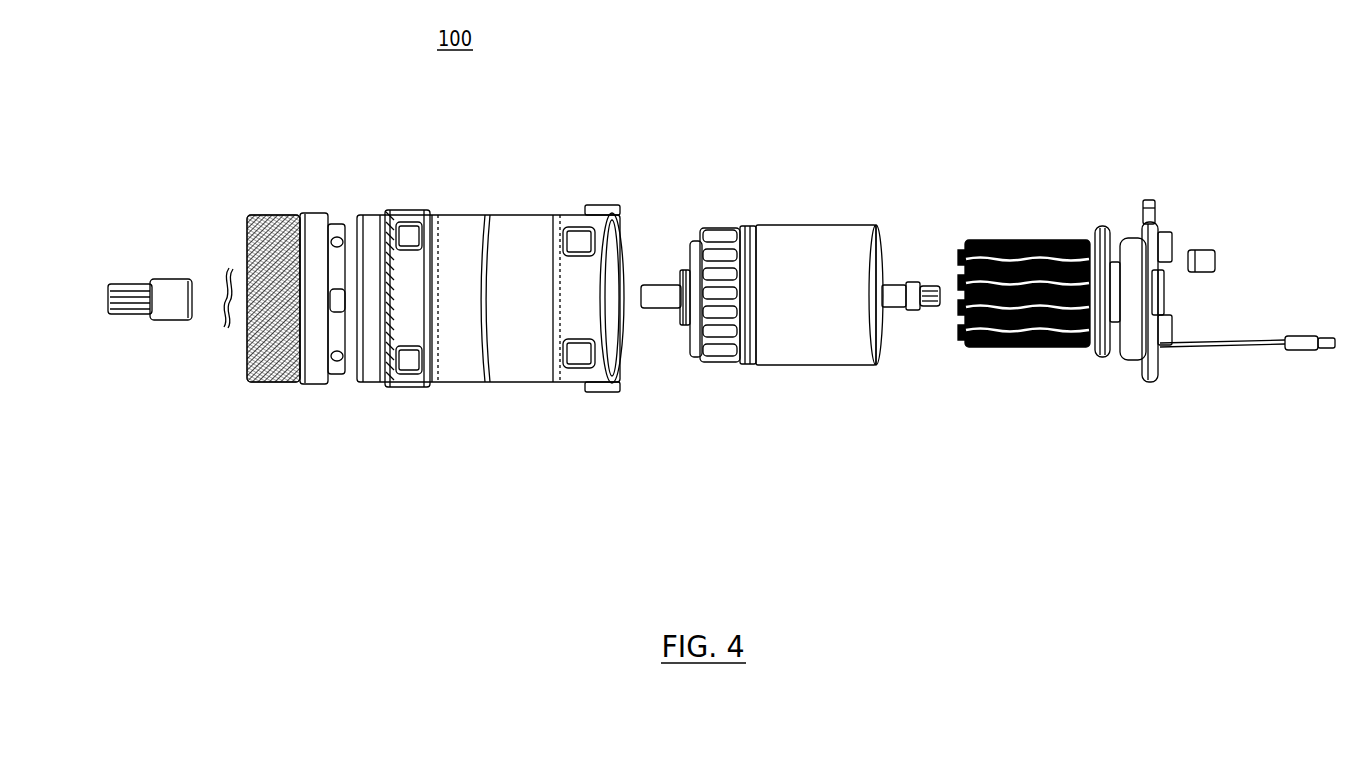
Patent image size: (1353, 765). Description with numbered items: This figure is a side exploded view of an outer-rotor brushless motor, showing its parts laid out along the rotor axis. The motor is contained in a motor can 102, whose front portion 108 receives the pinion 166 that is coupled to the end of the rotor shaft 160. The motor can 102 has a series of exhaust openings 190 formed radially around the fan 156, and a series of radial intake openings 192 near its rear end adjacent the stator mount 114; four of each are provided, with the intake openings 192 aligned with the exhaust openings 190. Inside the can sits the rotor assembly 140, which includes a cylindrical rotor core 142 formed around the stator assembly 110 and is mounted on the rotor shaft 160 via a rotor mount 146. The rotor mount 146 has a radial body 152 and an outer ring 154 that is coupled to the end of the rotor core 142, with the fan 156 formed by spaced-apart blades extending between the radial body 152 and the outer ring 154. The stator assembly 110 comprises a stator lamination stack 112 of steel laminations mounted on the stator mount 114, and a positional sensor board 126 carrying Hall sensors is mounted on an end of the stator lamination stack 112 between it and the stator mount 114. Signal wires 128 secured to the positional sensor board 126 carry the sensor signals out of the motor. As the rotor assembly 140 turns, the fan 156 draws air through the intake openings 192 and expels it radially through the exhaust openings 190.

The motor can 102 is at (490, 275).
The front portion 108 is at (286, 186).
The stator assembly 110 is at (1049, 212).
The stator lamination stack 112 is at (1003, 238).
The stator mount 114 is at (1147, 173).
The positional sensor board 126 is at (1100, 352).
The signal wires 128 is at (1235, 348).
The rotor assembly 140 is at (790, 290).
The rotor core 142 is at (810, 340).
The rotor mount 146 is at (719, 245).
The radial body 152 is at (695, 345).
The outer ring 154 is at (745, 342).
The fan 156 is at (722, 240).
The rotor shaft 160 is at (890, 300).
The pinion 166 is at (141, 313).
The exhaust openings 190 is at (407, 232).
The radial intake openings 192 is at (577, 370).